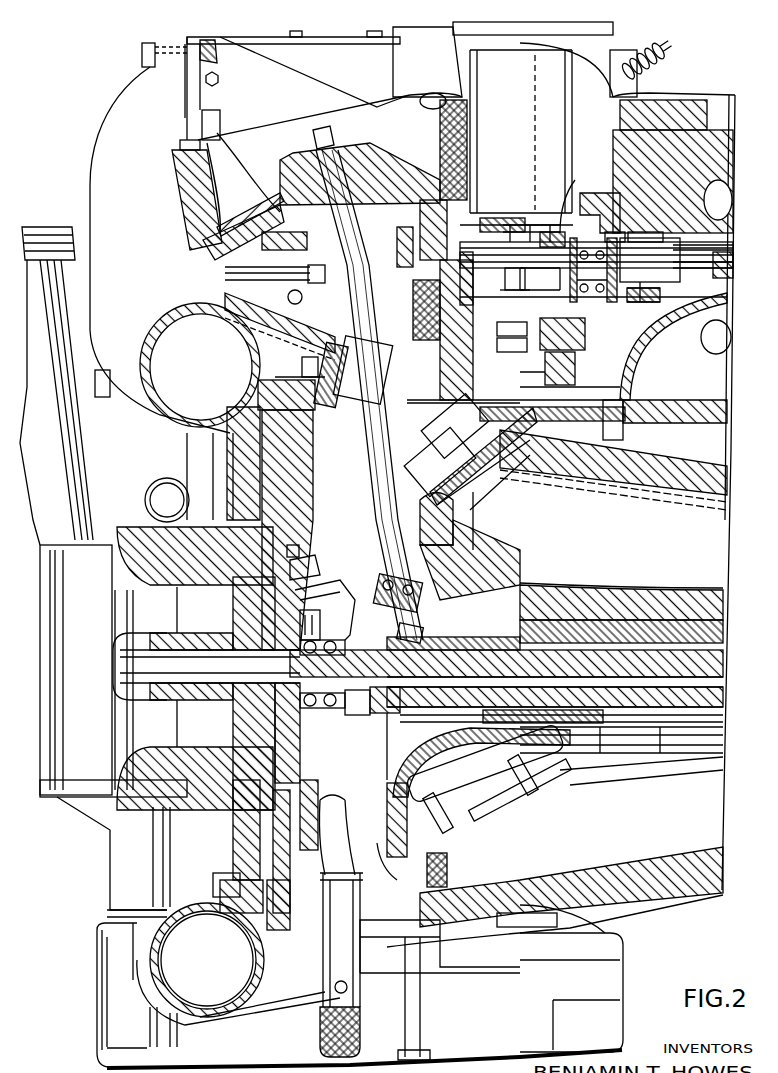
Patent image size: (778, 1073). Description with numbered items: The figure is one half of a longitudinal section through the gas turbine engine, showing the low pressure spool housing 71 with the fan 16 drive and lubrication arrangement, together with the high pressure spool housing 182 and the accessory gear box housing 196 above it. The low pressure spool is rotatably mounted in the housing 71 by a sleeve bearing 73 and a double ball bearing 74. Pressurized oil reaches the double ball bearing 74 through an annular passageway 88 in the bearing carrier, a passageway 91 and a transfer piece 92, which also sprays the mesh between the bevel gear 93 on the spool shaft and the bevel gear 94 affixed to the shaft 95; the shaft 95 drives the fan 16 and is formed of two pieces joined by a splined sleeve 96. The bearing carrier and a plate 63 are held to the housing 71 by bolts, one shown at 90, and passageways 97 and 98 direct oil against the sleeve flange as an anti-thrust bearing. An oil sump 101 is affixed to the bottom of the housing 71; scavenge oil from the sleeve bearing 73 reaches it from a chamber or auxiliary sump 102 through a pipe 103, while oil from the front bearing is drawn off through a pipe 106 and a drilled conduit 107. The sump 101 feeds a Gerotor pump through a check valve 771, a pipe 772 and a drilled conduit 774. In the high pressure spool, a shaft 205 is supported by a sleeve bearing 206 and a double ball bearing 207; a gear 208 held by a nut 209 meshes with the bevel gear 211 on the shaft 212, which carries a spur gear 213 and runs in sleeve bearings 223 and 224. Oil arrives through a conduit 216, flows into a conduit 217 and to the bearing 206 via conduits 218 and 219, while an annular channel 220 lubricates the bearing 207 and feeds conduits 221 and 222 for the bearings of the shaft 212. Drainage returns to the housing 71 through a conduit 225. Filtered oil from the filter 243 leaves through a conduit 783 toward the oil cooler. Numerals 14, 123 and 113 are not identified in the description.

The top cover plate 14 is at (255, 33).
The fan 16 is at (268, 151).
The filter 243 is at (559, 128).
The high pressure spool housing 182 is at (720, 133).
The outer casing wall 123 is at (735, 100).
The conduit 217 is at (612, 228).
The conduit 216 is at (568, 228).
The conduit 218 is at (617, 238).
The conduit 219 is at (655, 231).
The sleeve bearing 206 is at (690, 234).
The conduit 783 is at (478, 232).
The bevel gear 211 is at (481, 278).
The nut 209 is at (505, 270).
The gear 208 is at (542, 258).
The annular channel 220 is at (593, 270).
The double ball bearing 207 is at (596, 260).
The shaft 205 is at (653, 280).
The conduit 221 is at (618, 320).
The conduit 222 is at (583, 345).
The accessory gear box housing 196 is at (550, 353).
The spur gear 213 is at (540, 373).
The sleeve bearing 223 is at (500, 328).
The shaft 212 is at (500, 343).
The sleeve bearing 224 is at (476, 405).
The conduit 225 is at (395, 380).
The shaft 95 is at (385, 505).
The splined sleeve 96 is at (370, 468).
The sleeve bearing 73 is at (641, 633).
The bevel gear 94 is at (480, 630).
The low pressure spool housing 71 is at (500, 595).
The chamber or auxiliary sump 102 is at (483, 715).
The pipe 106 is at (427, 787).
The pipe 103 is at (527, 803).
The oil sump 101 is at (507, 1053).
The annular passageway 88 is at (318, 740).
The transfer piece 92 is at (355, 720).
The double ball bearing 74 is at (356, 732).
The passageway 91 is at (352, 748).
The drilled conduit 774 is at (340, 782).
The oil passage 113 is at (348, 858).
The conduit 107 is at (343, 833).
The bevel gear 93 is at (360, 625).
The passageway 98 is at (320, 615).
The passageway 97 is at (313, 590).
The bolt 90 is at (300, 568).
The plate 63 is at (298, 552).
The pipe 772 is at (350, 967).
The check valve 771 is at (323, 997).